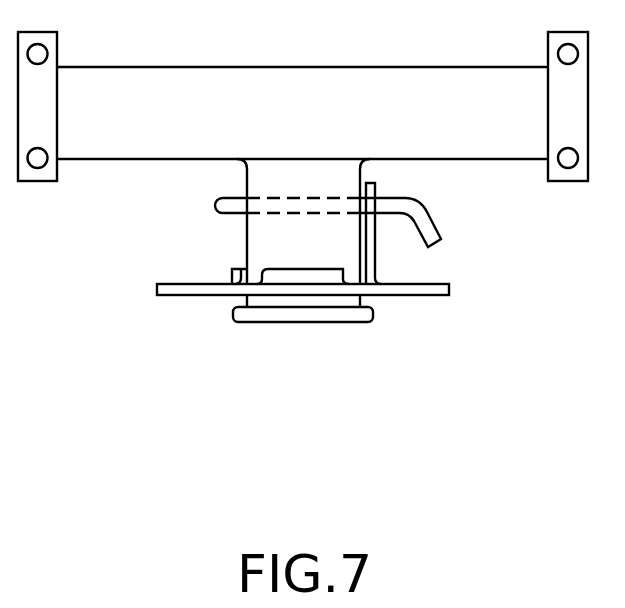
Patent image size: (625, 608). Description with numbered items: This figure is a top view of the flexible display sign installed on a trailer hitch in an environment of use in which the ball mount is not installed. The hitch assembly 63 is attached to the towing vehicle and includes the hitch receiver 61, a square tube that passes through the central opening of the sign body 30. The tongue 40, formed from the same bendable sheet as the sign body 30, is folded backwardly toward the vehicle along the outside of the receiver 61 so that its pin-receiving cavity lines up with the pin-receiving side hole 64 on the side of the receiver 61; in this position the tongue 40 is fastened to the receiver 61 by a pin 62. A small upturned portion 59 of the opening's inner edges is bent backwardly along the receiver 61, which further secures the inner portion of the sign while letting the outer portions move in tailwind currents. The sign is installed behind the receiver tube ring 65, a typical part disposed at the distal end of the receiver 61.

The sign body 30 is at (406, 298).
The tongue 40 is at (380, 243).
The upturned portion 59 is at (238, 275).
The hitch receiver 61 is at (262, 247).
The pin 62 is at (418, 217).
The hitch assembly 63 is at (105, 133).
The pin-receiving side hole 64 is at (247, 197).
The receiver tube ring 65 is at (233, 314).